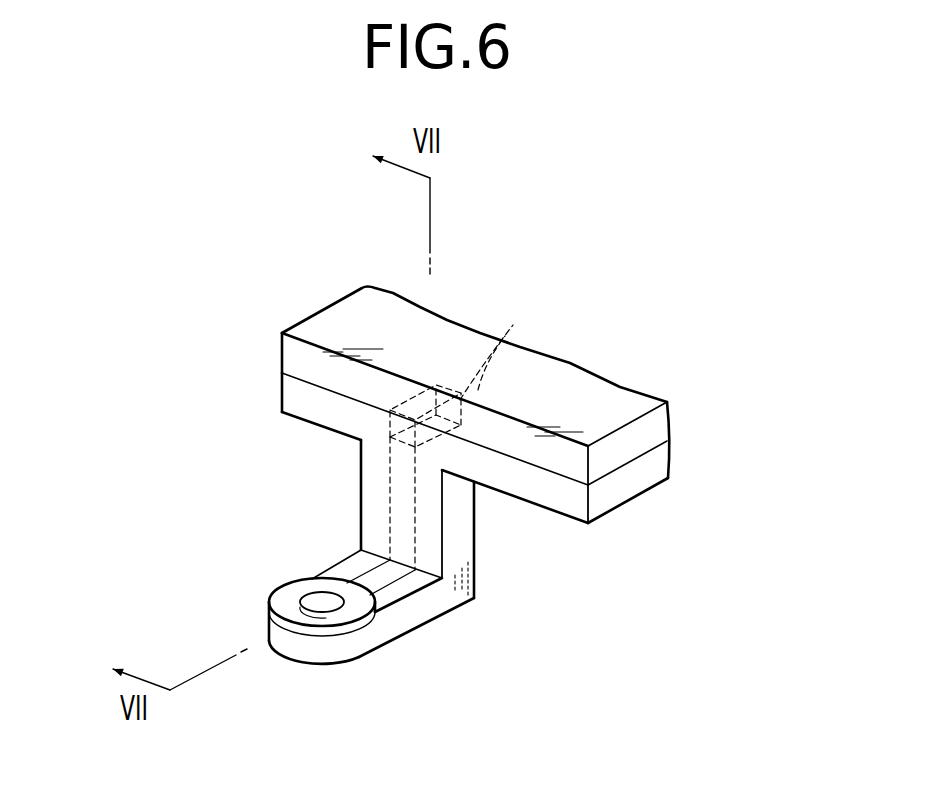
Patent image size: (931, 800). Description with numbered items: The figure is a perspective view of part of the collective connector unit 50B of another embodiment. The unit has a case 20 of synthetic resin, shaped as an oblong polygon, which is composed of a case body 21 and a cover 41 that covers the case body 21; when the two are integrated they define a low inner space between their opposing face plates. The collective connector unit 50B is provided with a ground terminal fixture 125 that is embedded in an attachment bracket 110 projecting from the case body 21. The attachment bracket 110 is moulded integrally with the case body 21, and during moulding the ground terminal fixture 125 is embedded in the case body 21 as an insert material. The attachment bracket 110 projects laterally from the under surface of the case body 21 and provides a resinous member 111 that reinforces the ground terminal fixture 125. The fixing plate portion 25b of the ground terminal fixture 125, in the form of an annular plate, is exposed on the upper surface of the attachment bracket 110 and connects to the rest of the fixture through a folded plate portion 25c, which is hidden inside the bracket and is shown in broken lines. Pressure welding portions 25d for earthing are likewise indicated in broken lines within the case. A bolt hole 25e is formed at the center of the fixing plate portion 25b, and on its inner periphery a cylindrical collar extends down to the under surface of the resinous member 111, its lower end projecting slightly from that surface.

The case 20 is at (680, 441).
The case body 21 is at (630, 500).
The cover 41 is at (613, 400).
The collective connector unit 50B is at (478, 310).
The attachment bracket 110 is at (451, 611).
The resinous member 111 is at (390, 622).
The ground terminal fixture 125 is at (350, 606).
The fixing plate portion 25b is at (285, 603).
The folded plate portion 25c is at (388, 490).
The pressure welding portion 25d is at (520, 324).
The bolt hole 25e is at (306, 597).